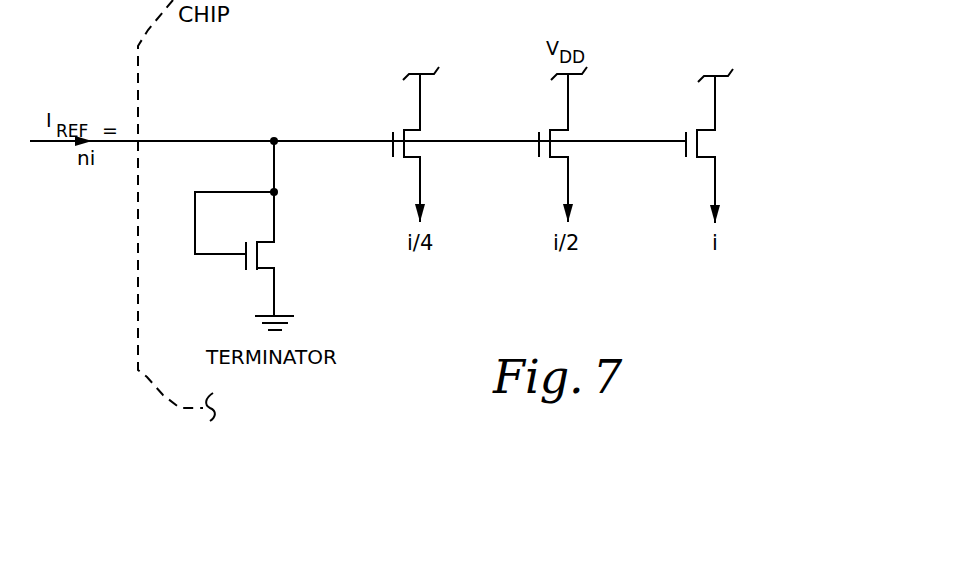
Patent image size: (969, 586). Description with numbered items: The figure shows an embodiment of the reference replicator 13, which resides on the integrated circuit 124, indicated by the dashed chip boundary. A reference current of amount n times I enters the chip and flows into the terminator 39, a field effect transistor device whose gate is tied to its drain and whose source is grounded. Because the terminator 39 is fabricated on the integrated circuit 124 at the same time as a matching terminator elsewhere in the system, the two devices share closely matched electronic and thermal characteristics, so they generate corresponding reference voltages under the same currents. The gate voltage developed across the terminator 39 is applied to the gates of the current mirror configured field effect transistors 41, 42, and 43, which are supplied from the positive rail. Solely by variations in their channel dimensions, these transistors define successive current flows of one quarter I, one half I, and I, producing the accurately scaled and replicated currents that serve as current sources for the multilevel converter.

The reference replicator 13 is at (783, 64).
The terminator 39 is at (290, 252).
The field effect transistor 41 is at (386, 133).
The field effect transistor 42 is at (532, 134).
The field effect transistor 43 is at (711, 146).
The integrated circuit 124 is at (138, 285).